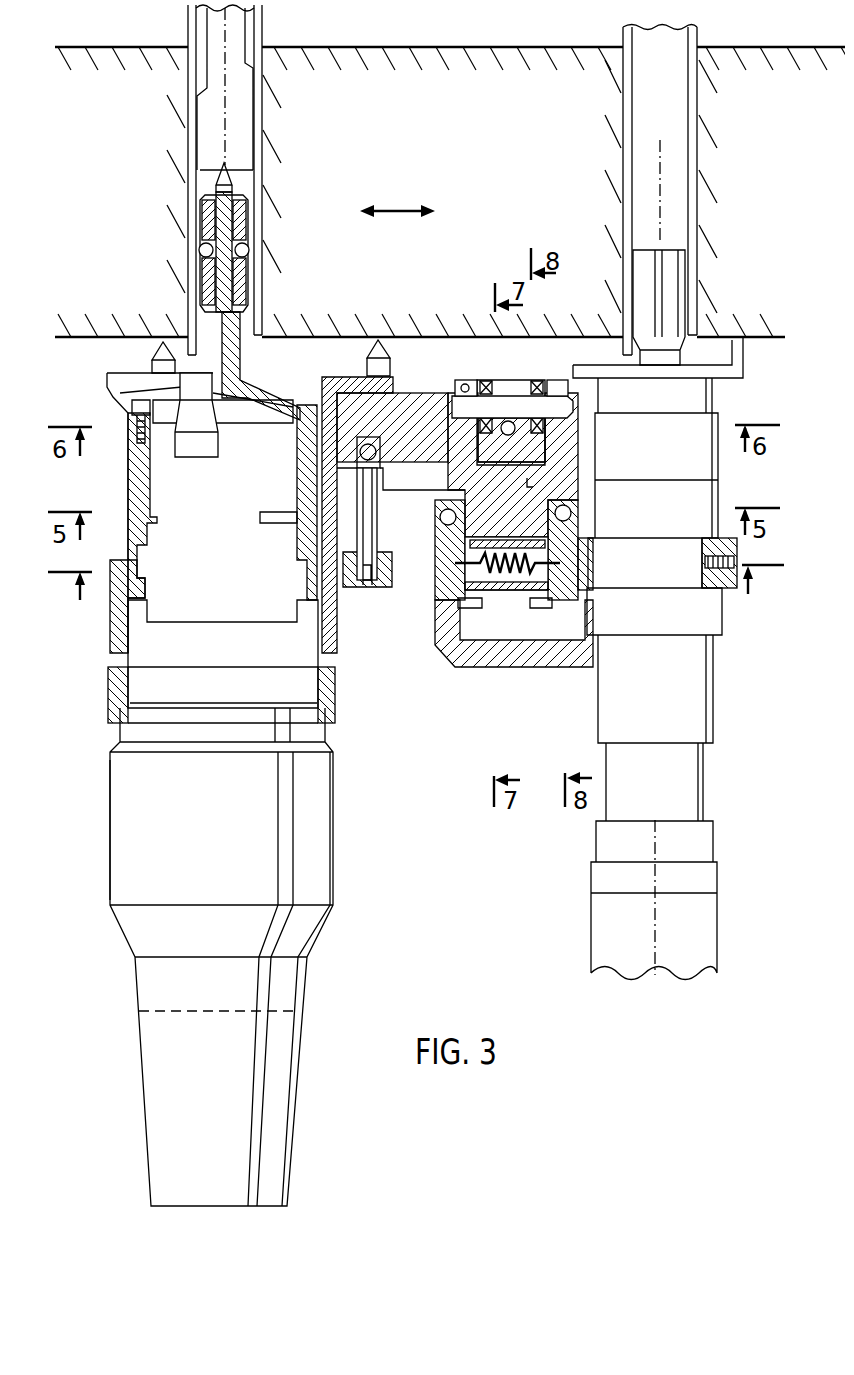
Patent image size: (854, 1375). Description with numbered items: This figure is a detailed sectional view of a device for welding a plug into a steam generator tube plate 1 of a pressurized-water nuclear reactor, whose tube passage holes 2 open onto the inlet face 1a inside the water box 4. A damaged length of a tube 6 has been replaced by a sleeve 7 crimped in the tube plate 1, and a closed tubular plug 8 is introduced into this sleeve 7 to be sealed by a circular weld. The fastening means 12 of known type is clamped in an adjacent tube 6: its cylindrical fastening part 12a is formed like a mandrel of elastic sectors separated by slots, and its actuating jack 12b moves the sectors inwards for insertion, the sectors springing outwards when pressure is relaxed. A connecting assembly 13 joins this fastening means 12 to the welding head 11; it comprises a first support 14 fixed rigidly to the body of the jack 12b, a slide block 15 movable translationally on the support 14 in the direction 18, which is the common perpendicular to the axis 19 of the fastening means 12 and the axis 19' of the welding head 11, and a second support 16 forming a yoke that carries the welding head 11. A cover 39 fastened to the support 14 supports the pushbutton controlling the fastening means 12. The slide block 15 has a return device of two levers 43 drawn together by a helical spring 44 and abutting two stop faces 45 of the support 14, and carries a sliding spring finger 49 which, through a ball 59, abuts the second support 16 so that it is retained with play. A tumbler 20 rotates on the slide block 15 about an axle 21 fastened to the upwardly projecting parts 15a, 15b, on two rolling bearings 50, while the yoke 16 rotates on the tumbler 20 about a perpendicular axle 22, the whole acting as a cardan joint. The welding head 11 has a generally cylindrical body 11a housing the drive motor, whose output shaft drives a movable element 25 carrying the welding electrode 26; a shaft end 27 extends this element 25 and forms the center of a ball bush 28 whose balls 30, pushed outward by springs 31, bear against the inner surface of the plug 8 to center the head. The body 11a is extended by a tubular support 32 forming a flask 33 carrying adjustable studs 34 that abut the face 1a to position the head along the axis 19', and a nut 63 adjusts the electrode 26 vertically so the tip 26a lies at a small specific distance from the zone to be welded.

The tube plate 1 is at (462, 135).
The inlet face 1a is at (752, 340).
The tube passage holes 2 is at (248, 40).
The water box 4 is at (463, 940).
The tube 6 is at (693, 182).
The sleeve 7 is at (262, 166).
The plug 8 is at (245, 128).
The welding head 11 is at (308, 862).
The body of the welding head 11a is at (131, 819).
The fastening means 12 is at (603, 918).
The cylindrical fastening part 12a is at (672, 293).
The actuating jack 12b is at (690, 718).
The connecting assembly 13 is at (409, 393).
The first support 14 is at (727, 588).
The slide block 15 is at (571, 513).
The upwardly projecting part of the slide block 15a is at (556, 380).
The upwardly projecting part of the slide block 15b is at (465, 380).
The second support 16 is at (400, 452).
The direction 18 is at (397, 200).
The axis of the fastening means 19 is at (659, 170).
The axis of the welding head 19' is at (183, 86).
The tumbler 20 is at (500, 380).
The axle 21 is at (513, 405).
The axle 22 is at (562, 452).
The movable element 25 is at (140, 510).
The welding electrode 26 is at (198, 420).
The tip of the electrode 26a is at (204, 362).
The shaft end 27 is at (222, 277).
The ball bush 28 is at (196, 233).
The balls 30 is at (242, 250).
The springs 31 is at (243, 292).
The tubular support 32 is at (118, 613).
The flask 33 is at (337, 377).
The adjustable studs 34 is at (379, 340).
The cover 39 is at (533, 660).
The levers 43 is at (560, 580).
The helical spring 44 is at (496, 575).
The stop faces 45 is at (542, 595).
The sliding spring finger 49 is at (367, 547).
The rolling bearings 50 is at (481, 430).
The ball 59 is at (358, 452).
The nut 63 is at (337, 708).